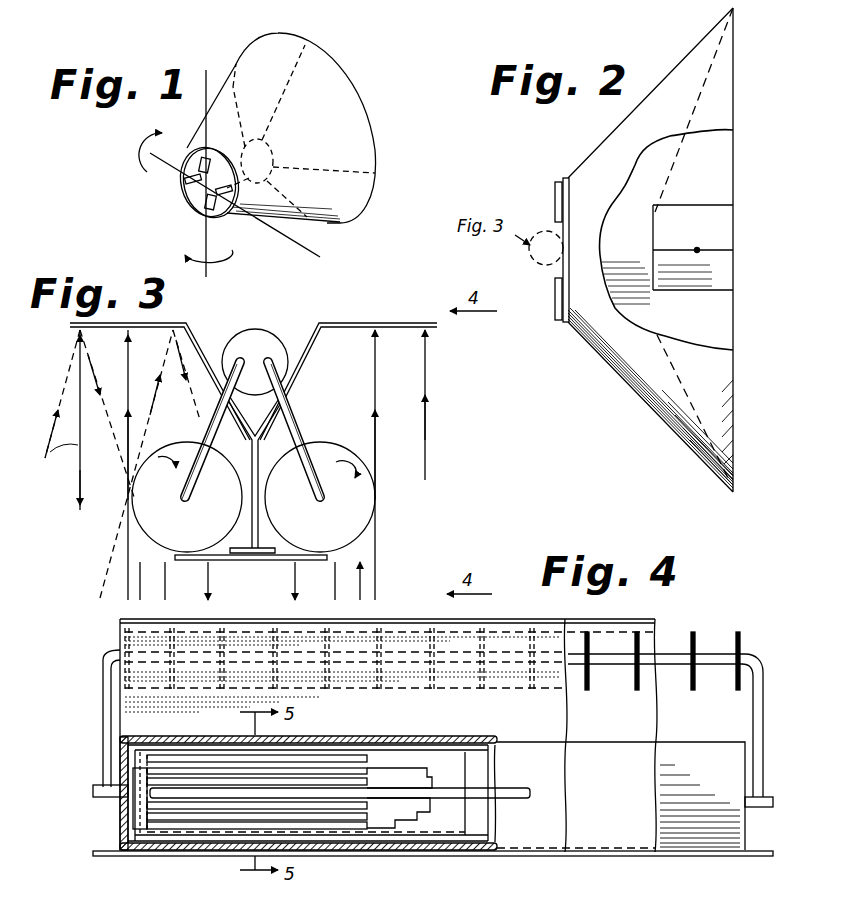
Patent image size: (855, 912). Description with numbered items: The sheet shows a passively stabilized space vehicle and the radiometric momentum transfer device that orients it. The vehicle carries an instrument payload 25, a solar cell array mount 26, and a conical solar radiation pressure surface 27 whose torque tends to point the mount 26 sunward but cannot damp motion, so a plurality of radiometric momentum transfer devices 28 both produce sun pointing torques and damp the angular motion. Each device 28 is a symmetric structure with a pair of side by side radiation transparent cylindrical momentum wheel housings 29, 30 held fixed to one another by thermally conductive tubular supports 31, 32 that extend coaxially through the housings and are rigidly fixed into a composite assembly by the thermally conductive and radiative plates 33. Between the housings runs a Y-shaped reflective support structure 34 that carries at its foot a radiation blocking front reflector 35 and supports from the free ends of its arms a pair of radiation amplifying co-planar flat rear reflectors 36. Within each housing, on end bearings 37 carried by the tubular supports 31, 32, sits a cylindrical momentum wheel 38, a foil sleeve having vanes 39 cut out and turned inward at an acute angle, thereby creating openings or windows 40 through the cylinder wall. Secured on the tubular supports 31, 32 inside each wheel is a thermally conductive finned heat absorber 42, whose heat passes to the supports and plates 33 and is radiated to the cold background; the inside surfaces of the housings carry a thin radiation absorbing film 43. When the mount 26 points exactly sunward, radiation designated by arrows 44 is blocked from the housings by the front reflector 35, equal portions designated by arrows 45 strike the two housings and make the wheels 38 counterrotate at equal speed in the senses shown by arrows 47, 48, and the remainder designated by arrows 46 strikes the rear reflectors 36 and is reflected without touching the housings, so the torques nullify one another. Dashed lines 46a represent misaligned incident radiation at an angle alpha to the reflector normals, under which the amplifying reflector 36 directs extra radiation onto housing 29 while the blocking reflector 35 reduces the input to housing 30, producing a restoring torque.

In FIG. 2, the instrument payload 25 is at (640, 228).
In FIG. 1, the solar cell array mount 26 is at (190, 190).
In FIG. 2, the solar cell array mount 26 is at (564, 178).
In FIG. 1, the conical solar radiation pressure surface 27 is at (358, 135).
In FIG. 2, the conical solar radiation pressure surface 27 is at (724, 100).
In FIG. 1, the radiometric momentum transfer device 28 is at (217, 207).
In FIG. 2, the radiometric momentum transfer device 28 is at (556, 195).
In FIG. 3, the radiometric momentum transfer device 28 is at (228, 322).
In FIG. 3, the cylindrical momentum wheel housing 29 is at (218, 534).
In FIG. 4, the cylindrical momentum wheel housing 29 is at (709, 755).
In FIG. 3, the cylindrical momentum wheel housing 30 is at (323, 539).
In FIG. 4, the cylindrical momentum wheel housing 30 is at (120, 843).
In FIG. 3, the tubular support 31 is at (215, 425).
In FIG. 4, the tubular support 31 is at (672, 666).
In FIG. 3, the tubular support 32 is at (292, 418).
In FIG. 4, the tubular support 32 is at (514, 800).
In FIG. 3, the plates 33 is at (258, 338).
In FIG. 4, the plates 33 is at (737, 636).
In FIG. 3, the Y-shaped reflective support structure 34 is at (251, 430).
In FIG. 3, the radiation blocking front reflector 35 is at (268, 562).
In FIG. 4, the radiation blocking front reflector 35 is at (686, 856).
In FIG. 3, the radiation amplifying co-planar flat rear reflectors 36 is at (68, 326).
In FIG. 4, the radiation amplifying co-planar flat rear reflectors 36 is at (396, 618).
In FIG. 4, the end bearings 37 is at (125, 803).
In FIG. 4, the cylindrical momentum wheel 38 is at (452, 770).
In FIG. 4, the vanes 39 is at (210, 808).
In FIG. 4, the openings or windows 40 is at (172, 780).
In FIG. 4, the finned heat absorber 42 is at (412, 805).
In FIG. 4, the thin film 43 is at (483, 840).
In FIG. 3, the arrows 44 is at (208, 590).
In FIG. 3, the arrows 45 is at (160, 585).
In FIG. 3, the arrows 46 is at (126, 376).
In FIG. 3, the dashed lines 46a is at (66, 390).
In FIG. 3, the arrow 47 is at (164, 477).
In FIG. 3, the arrow 48 is at (347, 490).